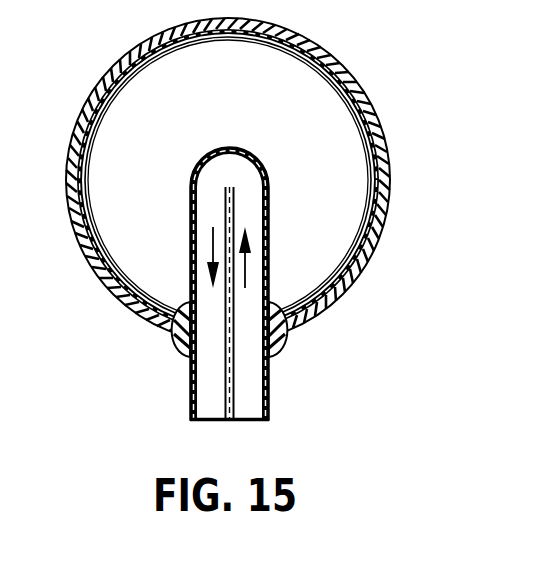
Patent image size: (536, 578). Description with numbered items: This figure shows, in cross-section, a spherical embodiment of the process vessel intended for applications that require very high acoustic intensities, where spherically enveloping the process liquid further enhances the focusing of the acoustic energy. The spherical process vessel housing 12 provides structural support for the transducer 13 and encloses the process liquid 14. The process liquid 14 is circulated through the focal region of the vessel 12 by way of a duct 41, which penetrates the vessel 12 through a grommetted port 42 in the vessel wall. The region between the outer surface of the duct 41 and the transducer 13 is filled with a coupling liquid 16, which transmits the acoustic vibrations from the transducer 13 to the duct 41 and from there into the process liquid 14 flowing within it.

The spherical process vessel housing 12 is at (380, 130).
The transducer 13 is at (110, 128).
The coupling liquid 16 is at (228, 180).
The process liquid 14 is at (229, 291).
The duct 41 is at (270, 393).
The grommetted port 42 is at (190, 350).